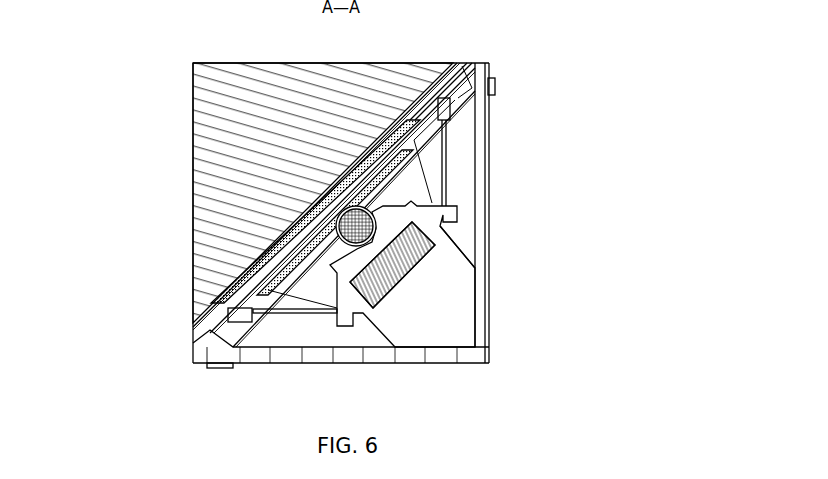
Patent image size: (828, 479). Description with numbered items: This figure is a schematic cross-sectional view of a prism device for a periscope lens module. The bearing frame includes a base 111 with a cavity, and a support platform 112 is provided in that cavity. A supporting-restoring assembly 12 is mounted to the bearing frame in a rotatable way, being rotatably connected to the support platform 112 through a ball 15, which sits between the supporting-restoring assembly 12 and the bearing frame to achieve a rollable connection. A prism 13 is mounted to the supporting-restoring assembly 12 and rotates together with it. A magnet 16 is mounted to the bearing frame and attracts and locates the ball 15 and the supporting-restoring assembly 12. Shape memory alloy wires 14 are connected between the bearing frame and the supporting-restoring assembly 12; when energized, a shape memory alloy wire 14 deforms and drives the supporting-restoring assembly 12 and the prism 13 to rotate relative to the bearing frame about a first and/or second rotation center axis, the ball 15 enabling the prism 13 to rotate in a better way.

The supporting-restoring assembly 12 is at (436, 115).
The prism 13 is at (227, 143).
The shape memory alloy wire 14 is at (418, 148).
The ball 15 is at (377, 213).
The magnet 16 is at (442, 230).
The base 111 is at (488, 294).
The support platform 112 is at (460, 250).